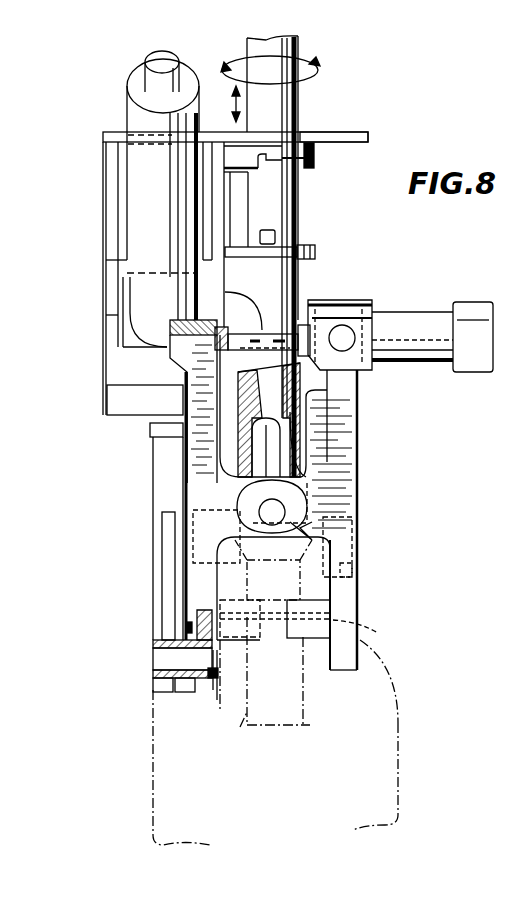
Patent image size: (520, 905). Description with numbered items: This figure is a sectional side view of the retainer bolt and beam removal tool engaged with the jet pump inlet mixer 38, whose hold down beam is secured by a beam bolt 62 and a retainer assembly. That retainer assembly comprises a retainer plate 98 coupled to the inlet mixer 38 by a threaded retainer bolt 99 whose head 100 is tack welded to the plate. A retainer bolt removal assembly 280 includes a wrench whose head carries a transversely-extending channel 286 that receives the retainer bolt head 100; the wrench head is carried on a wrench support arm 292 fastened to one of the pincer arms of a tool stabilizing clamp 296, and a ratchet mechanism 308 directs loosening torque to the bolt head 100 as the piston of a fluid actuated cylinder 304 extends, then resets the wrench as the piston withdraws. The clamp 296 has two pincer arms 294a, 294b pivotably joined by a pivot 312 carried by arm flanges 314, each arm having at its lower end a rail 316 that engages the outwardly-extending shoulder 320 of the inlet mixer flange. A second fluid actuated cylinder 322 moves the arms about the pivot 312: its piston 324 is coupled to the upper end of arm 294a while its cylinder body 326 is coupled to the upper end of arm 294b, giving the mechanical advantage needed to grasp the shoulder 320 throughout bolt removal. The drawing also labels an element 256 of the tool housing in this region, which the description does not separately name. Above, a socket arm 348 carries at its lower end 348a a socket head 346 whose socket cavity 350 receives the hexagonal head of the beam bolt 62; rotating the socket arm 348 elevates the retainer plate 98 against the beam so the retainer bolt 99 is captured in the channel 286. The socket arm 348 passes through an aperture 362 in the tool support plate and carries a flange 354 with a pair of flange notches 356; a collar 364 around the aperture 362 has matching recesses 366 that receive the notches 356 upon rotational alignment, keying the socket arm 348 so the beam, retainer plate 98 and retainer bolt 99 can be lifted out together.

The jet pump inlet mixer 38 is at (291, 786).
The beam bolt 62 is at (260, 450).
The retainer plate 98 is at (378, 633).
The retainer bolt 99 is at (262, 660).
The retainer bolt head 100 is at (208, 680).
The housing 256 is at (313, 473).
The retainer bolt removal assembly 280 is at (100, 240).
The channel 286 is at (160, 662).
The wrench support arm 292 is at (158, 487).
The pincer arm 294a is at (182, 358).
The pincer arm 294b is at (347, 362).
The tool stabilizing clamp 296 is at (425, 479).
The fluid actuated cylinder 304 is at (130, 171).
The ratchet mechanism 308 is at (183, 635).
The pivot 312 is at (323, 499).
The arm flanges 314 is at (330, 548).
The rail 316 is at (320, 607).
The shoulder 320 is at (238, 740).
The fluid actuated cylinder 322 is at (440, 295).
The piston 324 is at (202, 318).
The cylinder body 326 is at (412, 320).
The socket head 346 is at (300, 437).
The socket arm 348 is at (298, 213).
The lower end of socket arm 348a is at (260, 383).
The socket cavity 350 is at (300, 409).
The flange 354 is at (316, 256).
The flange notches 356 is at (282, 238).
The aperture 362 is at (300, 130).
The collar 364 is at (316, 155).
The recesses 366 is at (312, 163).